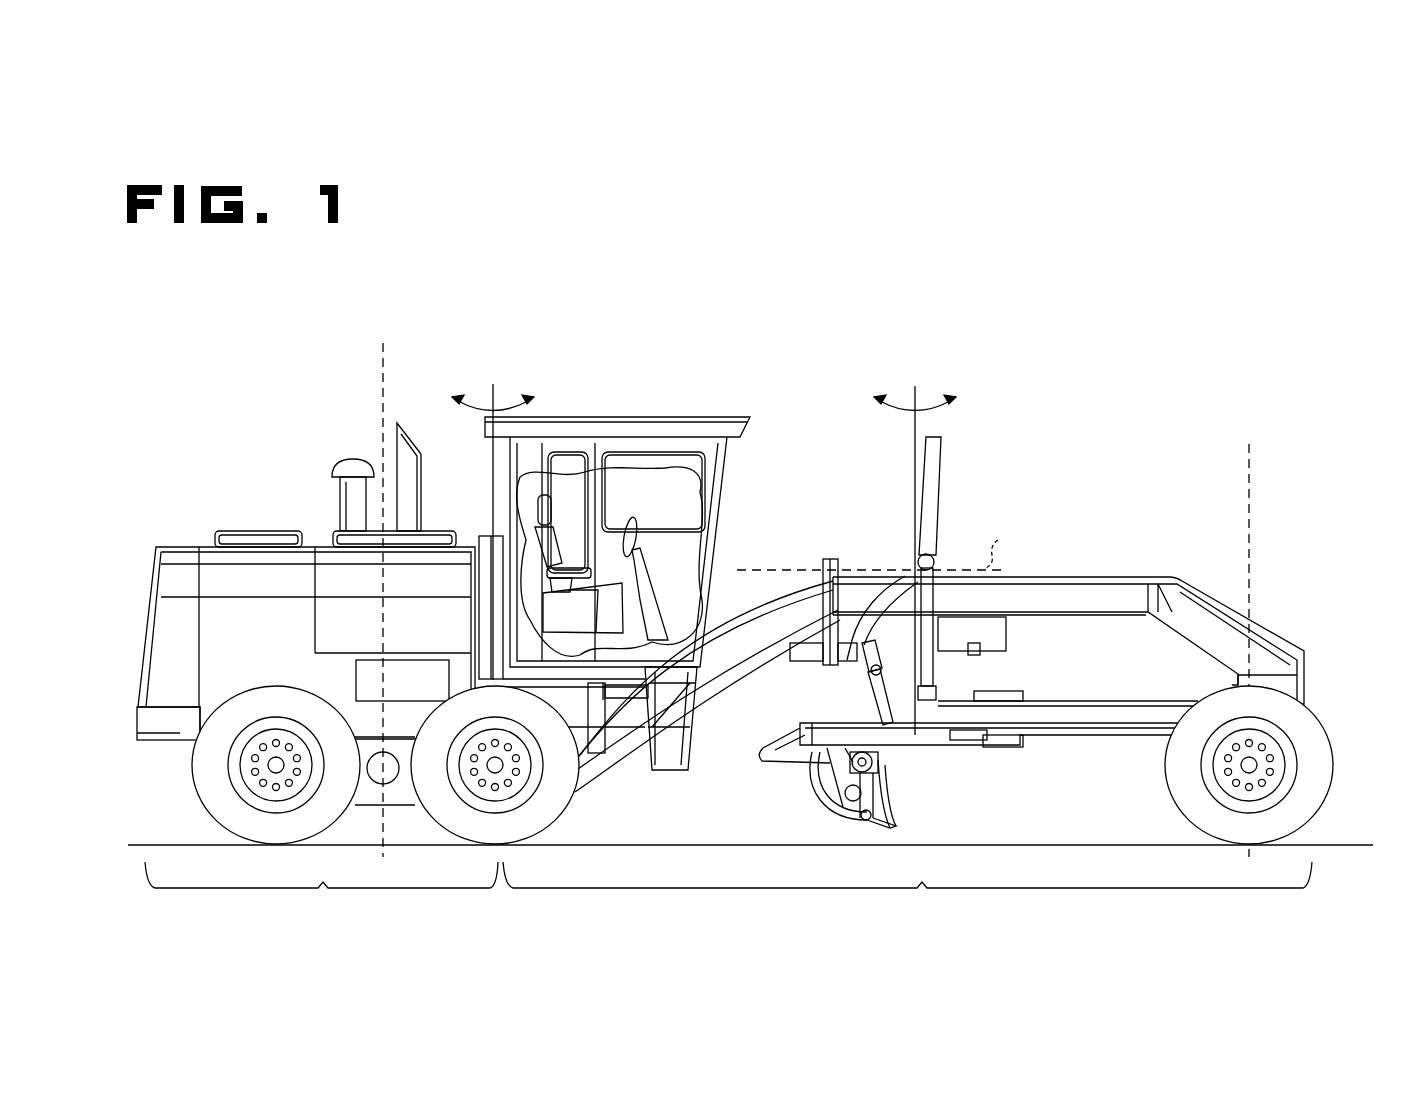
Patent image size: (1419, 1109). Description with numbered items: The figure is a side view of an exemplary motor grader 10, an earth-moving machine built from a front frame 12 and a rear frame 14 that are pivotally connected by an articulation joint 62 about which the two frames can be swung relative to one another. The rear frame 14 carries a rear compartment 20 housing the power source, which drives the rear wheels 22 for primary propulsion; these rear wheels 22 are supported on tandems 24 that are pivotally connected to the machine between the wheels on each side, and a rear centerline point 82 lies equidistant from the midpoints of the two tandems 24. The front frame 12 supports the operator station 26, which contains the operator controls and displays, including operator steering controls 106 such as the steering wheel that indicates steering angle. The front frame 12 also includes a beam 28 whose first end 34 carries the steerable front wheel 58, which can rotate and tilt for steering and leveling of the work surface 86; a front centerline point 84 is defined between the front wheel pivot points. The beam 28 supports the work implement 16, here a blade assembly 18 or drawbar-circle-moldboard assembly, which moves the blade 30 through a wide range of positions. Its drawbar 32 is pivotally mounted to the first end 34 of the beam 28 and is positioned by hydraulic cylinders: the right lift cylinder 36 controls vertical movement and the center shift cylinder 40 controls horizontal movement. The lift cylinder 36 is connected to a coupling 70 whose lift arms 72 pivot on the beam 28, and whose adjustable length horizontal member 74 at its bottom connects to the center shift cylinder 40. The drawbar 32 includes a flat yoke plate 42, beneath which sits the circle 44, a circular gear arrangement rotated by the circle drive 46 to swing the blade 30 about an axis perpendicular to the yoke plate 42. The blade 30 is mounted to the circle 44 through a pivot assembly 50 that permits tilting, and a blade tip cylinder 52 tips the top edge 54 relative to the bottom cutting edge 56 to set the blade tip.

The motor grader 10 is at (1141, 325).
The front frame 12 is at (907, 892).
The rear frame 14 is at (321, 892).
The work implement 16 is at (987, 792).
The blade assembly 18 is at (1003, 768).
The rear compartment 20 is at (208, 618).
The rear wheels 22 is at (226, 818).
The tandems 24 is at (372, 782).
The operator station 26 is at (730, 470).
The beam 28 is at (1125, 586).
The blade 30 is at (888, 808).
The drawbar 32 is at (1148, 722).
The first end 34 is at (1211, 687).
The right lift cylinder 36 is at (936, 490).
The center shift cylinder 40 is at (867, 668).
The yoke plate 42 is at (808, 726).
The circle 44 is at (998, 748).
The circle drive 46 is at (1015, 668).
The pivot assembly 50 is at (807, 793).
The blade tip cylinder 52 is at (785, 762).
The top edge 54 is at (875, 765).
The bottom cutting edge 56 is at (885, 827).
The right front wheel 58 is at (1315, 765).
The articulation joint 62 is at (473, 526).
The coupling 70 is at (818, 552).
The lift arms 72 is at (878, 580).
The adjustable length horizontal member 74 is at (800, 653).
The rear centerline point 82 is at (383, 362).
The front centerline point 84 is at (1250, 508).
The work surface 86 is at (1330, 845).
The operator steering controls 106 is at (634, 518).